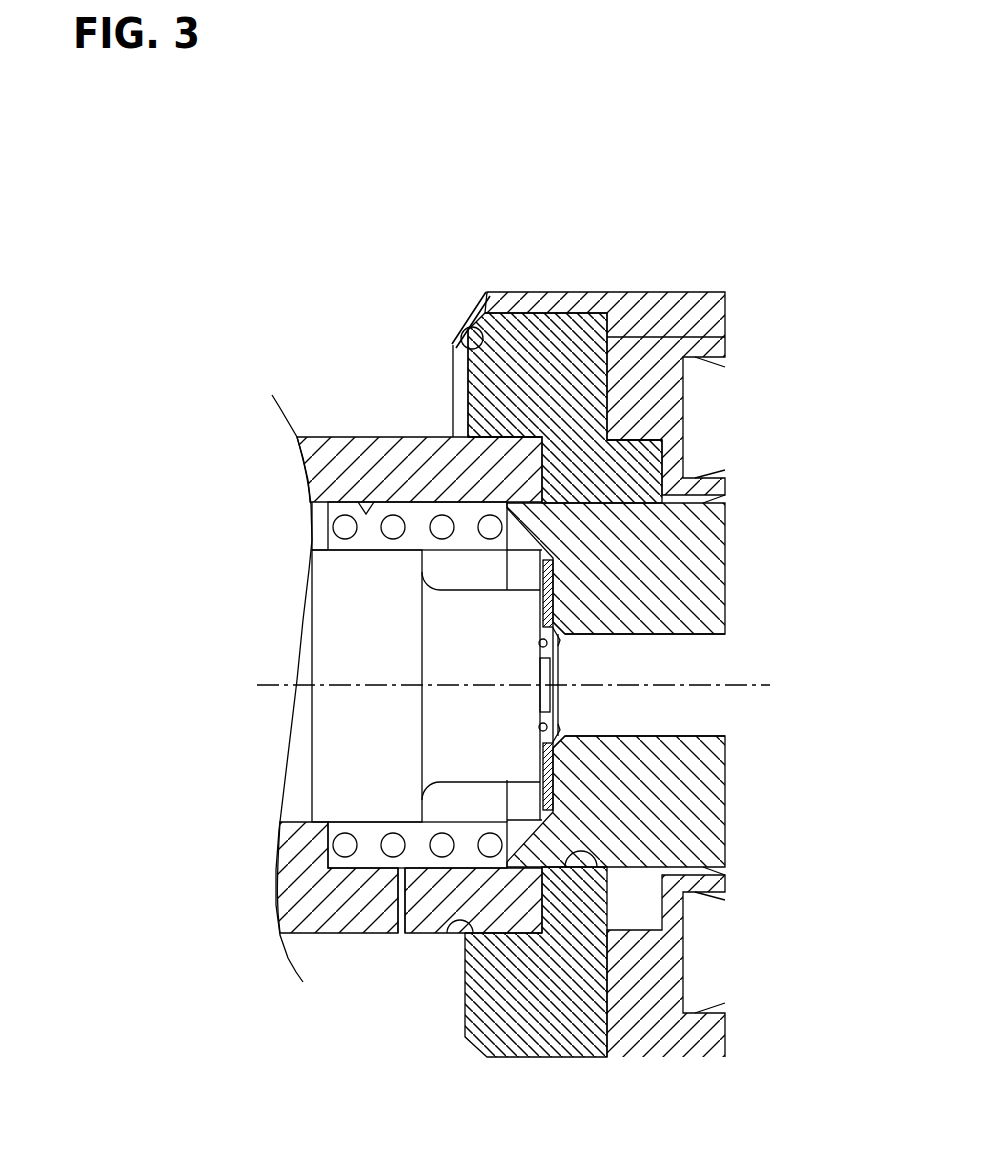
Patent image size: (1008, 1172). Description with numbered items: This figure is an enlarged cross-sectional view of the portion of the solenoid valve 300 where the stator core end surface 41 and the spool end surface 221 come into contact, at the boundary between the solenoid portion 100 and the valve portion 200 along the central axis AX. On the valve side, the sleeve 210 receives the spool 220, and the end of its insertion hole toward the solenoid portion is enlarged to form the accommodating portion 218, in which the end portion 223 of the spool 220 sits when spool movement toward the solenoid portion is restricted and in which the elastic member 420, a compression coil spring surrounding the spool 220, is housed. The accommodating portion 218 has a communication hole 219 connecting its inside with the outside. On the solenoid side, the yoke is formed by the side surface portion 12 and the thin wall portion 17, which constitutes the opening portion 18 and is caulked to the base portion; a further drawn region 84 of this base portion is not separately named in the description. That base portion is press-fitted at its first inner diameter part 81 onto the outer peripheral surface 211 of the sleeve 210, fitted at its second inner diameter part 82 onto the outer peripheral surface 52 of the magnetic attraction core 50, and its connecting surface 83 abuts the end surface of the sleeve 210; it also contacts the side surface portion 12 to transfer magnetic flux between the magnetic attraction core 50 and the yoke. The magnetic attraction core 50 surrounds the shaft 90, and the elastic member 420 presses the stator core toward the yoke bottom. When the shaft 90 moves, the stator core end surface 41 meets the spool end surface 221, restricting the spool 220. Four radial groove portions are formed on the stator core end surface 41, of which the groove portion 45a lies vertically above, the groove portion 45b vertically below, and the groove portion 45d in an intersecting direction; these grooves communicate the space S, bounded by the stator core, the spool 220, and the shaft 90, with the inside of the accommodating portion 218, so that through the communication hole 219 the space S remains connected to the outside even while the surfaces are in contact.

The solenoid valve 300 is at (250, 247).
The valve portion 200 is at (270, 322).
The solenoid portion 100 is at (776, 320).
The side surface portion 12 is at (690, 302).
The thin wall portion 17 is at (507, 302).
The opening portion 18 is at (448, 332).
The bearing holder 84 is at (585, 313).
The outer peripheral surface 52 is at (633, 505).
The magnetic attraction core 50 is at (680, 584).
The shaft 90 is at (680, 724).
The space S is at (563, 638).
The central axis AX is at (534, 688).
The sleeve 210 is at (322, 456).
The outer peripheral surface 211 is at (490, 427).
The accommodating portion 218 is at (360, 496).
The elastic member 420 is at (353, 833).
The end portion 223 is at (436, 933).
The spool 220 is at (378, 793).
The communication hole 219 is at (402, 935).
The first inner diameter part 81 is at (448, 935).
The stator core end surface 41 is at (540, 612).
The groove portion 45a is at (540, 552).
The groove portion 45b is at (548, 797).
The groove portion 45d is at (545, 668).
The spool end surface 221 is at (540, 733).
The connecting surface 83 is at (520, 936).
The second inner diameter part 82 is at (566, 868).